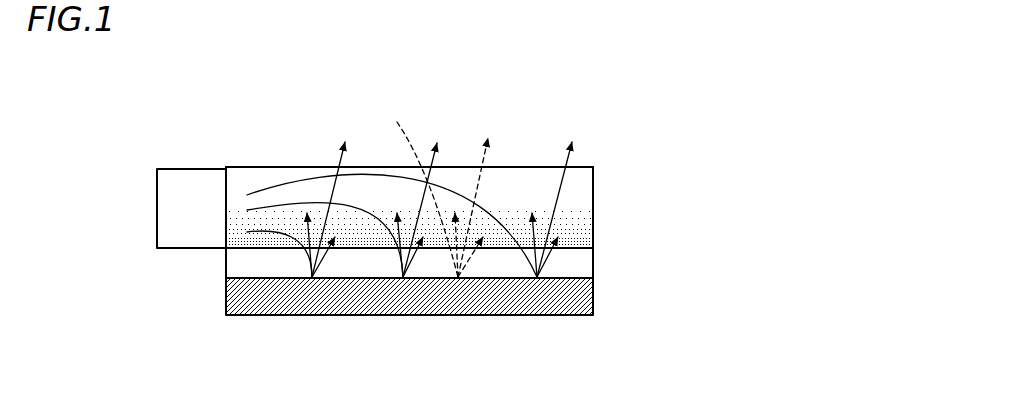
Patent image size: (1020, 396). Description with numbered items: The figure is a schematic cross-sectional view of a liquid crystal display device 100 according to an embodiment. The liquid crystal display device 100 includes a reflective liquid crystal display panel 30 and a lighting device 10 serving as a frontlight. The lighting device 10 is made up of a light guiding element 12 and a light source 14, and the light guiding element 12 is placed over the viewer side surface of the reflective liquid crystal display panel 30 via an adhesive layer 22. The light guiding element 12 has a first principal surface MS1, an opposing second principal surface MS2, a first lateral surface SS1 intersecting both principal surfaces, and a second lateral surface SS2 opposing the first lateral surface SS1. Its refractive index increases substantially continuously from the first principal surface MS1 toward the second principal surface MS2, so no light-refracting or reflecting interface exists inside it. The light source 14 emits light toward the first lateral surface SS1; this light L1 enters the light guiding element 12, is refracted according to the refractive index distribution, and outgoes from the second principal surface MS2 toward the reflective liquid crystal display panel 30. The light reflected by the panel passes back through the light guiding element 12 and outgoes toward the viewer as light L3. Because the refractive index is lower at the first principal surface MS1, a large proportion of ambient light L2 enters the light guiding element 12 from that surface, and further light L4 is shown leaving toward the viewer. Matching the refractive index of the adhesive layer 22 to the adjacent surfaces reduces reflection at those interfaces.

The liquid crystal display device 100 is at (683, 114).
The lighting device 10 is at (610, 170).
The light guiding element 12 is at (532, 173).
The light source 14 is at (200, 178).
The adhesive layer 22 is at (585, 266).
The reflective liquid crystal display panel 30 is at (585, 298).
The first principal surface MS1 is at (315, 165).
The second principal surface MS2 is at (265, 250).
The first lateral surface SS1 is at (227, 197).
The second lateral surface SS2 is at (597, 178).
The light L1 is at (255, 190).
The ambient light L2 is at (434, 186).
The light L3 is at (348, 150).
The scattered light L4 is at (488, 152).